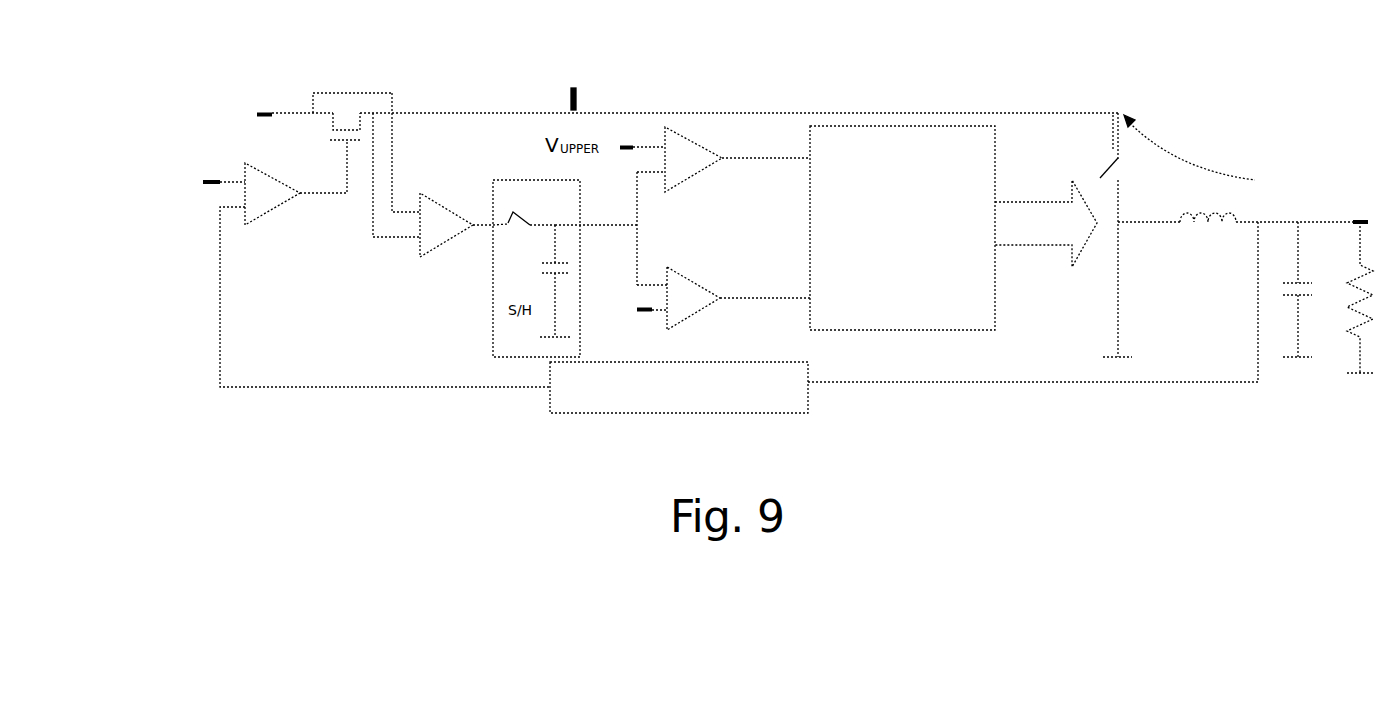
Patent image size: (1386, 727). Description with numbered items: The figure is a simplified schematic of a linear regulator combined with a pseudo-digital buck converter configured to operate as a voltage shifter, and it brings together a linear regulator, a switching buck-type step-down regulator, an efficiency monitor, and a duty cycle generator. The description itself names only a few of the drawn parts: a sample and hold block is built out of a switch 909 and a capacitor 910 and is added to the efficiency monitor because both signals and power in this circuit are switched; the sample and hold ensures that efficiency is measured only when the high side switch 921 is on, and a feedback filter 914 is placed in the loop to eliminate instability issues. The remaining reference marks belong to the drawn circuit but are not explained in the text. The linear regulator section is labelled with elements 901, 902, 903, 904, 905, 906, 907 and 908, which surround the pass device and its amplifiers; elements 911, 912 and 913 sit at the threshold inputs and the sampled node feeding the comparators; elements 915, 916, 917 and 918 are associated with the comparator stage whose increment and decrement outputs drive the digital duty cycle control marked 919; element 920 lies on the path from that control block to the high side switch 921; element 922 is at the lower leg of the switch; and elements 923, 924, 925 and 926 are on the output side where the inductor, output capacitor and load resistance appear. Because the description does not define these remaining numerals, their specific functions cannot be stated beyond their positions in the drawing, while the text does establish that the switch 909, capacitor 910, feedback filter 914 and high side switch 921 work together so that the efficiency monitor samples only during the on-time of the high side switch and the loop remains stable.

The reference voltage input VREF 901 is at (220, 182).
The input voltage VIN 902 is at (297, 113).
The pass transistor 903 is at (357, 130).
The transistor output connection 904 is at (380, 93).
The regulated supply line 905 is at (423, 113).
The error operational amplifier 906 is at (263, 212).
The feedback path 907 is at (220, 280).
The operational amplifier 908 is at (445, 243).
The switch 909 is at (510, 207).
The capacitor 910 is at (550, 275).
The regulated voltage VINREG 911 is at (643, 143).
The sample-and-hold output node 912 is at (637, 257).
The lower threshold input VLOWER 913 is at (653, 312).
The feedback filter 914 is at (698, 400).
The upper comparator 915 is at (687, 173).
The lower comparator 916 is at (688, 308).
The increment signal 917 is at (773, 158).
The decrement signal 918 is at (747, 293).
The digital duty cycle control 919 is at (907, 167).
The drive signal 920 is at (1045, 220).
The high side switch 921 is at (1112, 150).
The switch ground connection 922 is at (1112, 273).
The inductor 923 is at (1205, 235).
The output capacitor 924 is at (1293, 278).
The inductor voltage VL 925 is at (1180, 140).
The load resistor 926 is at (1350, 263).